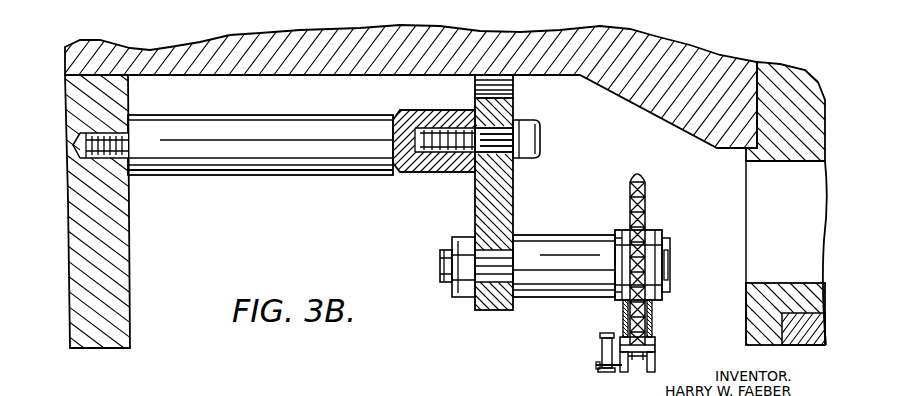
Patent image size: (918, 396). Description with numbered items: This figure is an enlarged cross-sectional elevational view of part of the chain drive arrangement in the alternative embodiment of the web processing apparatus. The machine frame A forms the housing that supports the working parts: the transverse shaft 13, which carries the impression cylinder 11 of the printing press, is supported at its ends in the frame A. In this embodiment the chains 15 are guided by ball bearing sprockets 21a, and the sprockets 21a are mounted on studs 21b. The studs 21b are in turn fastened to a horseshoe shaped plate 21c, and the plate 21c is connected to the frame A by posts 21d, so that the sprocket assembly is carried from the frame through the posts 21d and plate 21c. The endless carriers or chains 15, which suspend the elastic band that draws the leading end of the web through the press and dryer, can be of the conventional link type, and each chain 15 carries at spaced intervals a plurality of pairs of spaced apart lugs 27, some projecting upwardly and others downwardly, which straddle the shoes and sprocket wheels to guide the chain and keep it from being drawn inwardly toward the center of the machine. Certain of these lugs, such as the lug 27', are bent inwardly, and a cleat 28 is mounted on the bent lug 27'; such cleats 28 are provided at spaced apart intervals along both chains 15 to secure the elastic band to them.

The transverse shaft 13 is at (305, 70).
The impression cylinder 11 is at (749, 348).
The machine frame A is at (130, 250).
The posts 21d is at (228, 176).
The horseshoe shaped plate 21c is at (513, 207).
The studs 21b is at (571, 223).
The ball bearing sprockets 21a is at (647, 188).
The lugs 27 is at (657, 331).
The endless carriers or chains 15 is at (655, 330).
The cleat 28 is at (604, 333).
The lug 27' is at (589, 354).